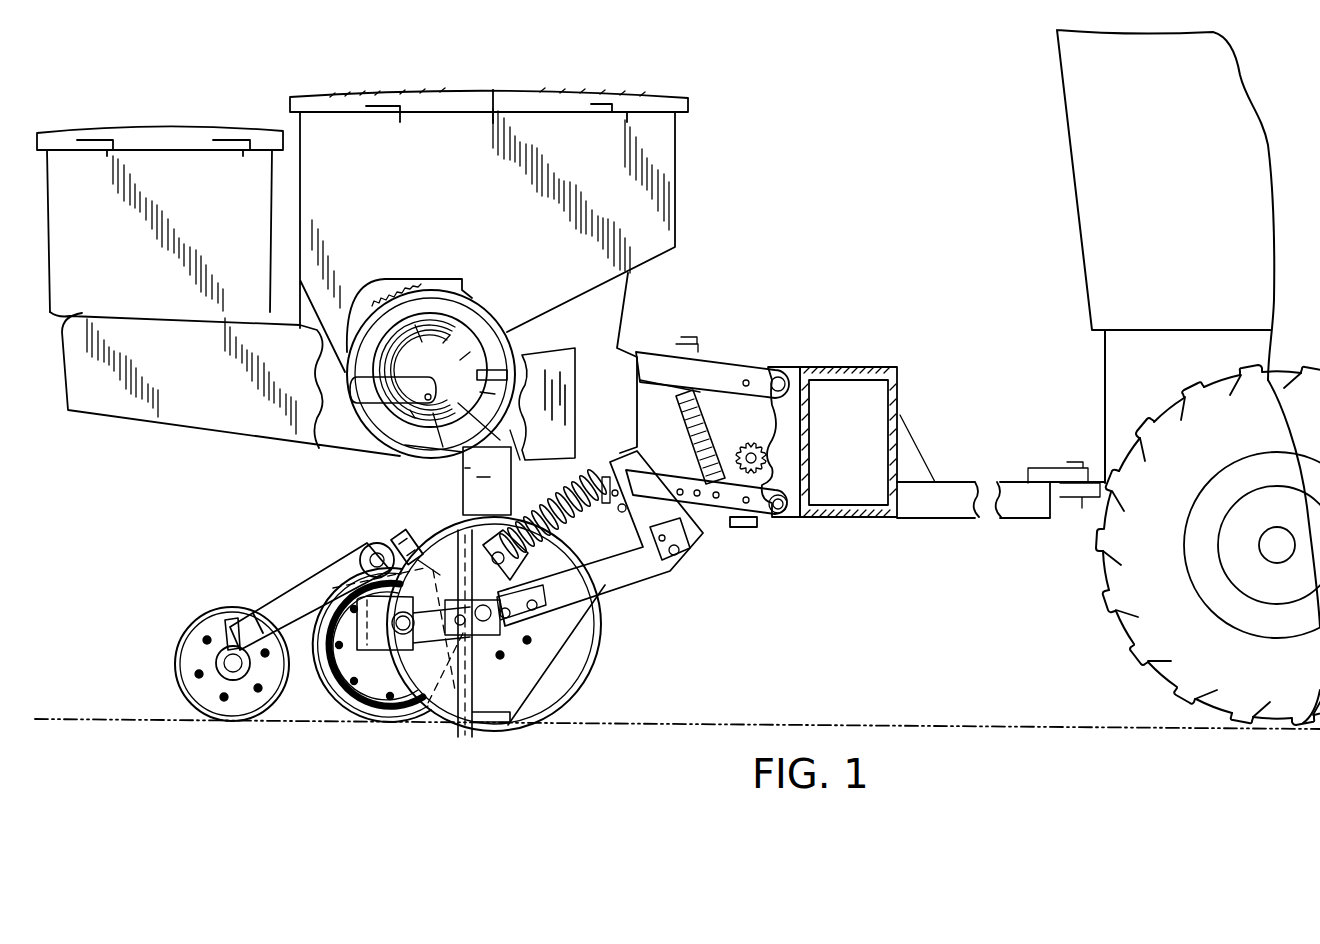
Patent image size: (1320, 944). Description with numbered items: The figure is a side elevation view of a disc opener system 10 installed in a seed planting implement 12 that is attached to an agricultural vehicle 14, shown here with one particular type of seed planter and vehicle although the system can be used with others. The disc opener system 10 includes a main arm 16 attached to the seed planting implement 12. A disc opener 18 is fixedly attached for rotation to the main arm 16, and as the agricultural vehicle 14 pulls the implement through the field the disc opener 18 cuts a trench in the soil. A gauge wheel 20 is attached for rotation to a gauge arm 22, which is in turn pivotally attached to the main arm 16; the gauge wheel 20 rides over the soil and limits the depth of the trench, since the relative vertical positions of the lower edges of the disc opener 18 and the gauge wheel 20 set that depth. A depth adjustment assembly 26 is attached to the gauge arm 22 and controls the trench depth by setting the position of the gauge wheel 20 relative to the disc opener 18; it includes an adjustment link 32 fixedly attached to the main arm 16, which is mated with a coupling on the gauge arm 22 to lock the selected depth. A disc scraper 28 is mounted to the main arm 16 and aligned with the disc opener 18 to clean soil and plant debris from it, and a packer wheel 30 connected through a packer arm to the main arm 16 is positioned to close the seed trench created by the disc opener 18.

The disc opener system 10 is at (298, 522).
The seed planting implement 12 is at (676, 314).
The agricultural vehicle 14 is at (1104, 372).
The main arm 16 is at (622, 592).
The disc opener 18 is at (500, 735).
The gauge wheel 20 is at (335, 707).
The gauge arm 22 is at (328, 684).
The depth adjustment assembly 26 is at (411, 534).
The disc scraper 28 is at (533, 691).
The packer wheel 30 is at (208, 620).
The adjustment link 32 is at (287, 592).